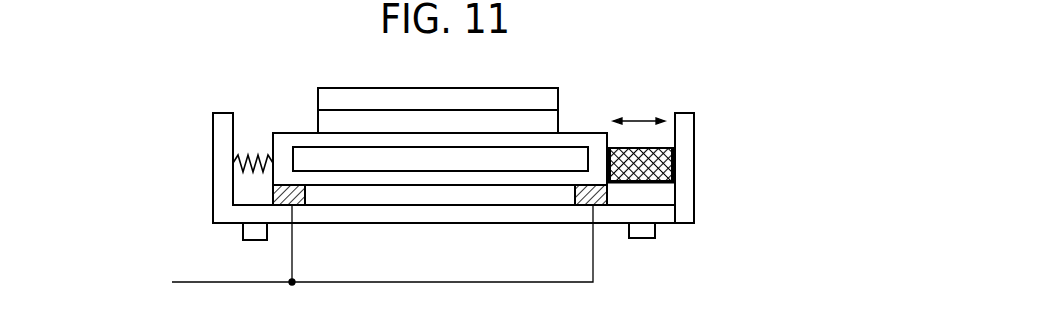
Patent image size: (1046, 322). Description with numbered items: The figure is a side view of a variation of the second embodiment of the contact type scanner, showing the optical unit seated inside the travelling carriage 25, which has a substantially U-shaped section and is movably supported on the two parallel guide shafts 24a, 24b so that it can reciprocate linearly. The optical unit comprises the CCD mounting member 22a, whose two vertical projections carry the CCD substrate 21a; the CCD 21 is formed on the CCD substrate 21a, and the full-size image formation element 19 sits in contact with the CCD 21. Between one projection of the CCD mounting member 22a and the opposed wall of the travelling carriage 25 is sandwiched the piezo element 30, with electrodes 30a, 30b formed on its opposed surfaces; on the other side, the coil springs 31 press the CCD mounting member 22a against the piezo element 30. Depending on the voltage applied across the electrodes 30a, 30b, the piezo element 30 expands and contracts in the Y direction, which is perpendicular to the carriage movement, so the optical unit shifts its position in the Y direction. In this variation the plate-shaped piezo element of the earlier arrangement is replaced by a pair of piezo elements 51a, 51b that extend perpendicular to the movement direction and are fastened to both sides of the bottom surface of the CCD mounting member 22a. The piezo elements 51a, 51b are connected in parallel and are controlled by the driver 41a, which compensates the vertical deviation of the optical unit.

The full-size image formation element 19 is at (530, 102).
The CCD 21 is at (553, 125).
The CCD substrate 21a is at (297, 132).
The CCD mounting member 22a is at (437, 186).
The guide shaft 24a is at (243, 237).
The guide shaft 24b is at (648, 245).
The travelling carriage 25 is at (688, 172).
The piezo element 30 is at (675, 176).
The electrode 30a is at (608, 190).
The electrode 30b is at (673, 205).
The coil spring 31 is at (240, 177).
The driver 41a is at (321, 258).
The piezo element 51a is at (283, 198).
The piezo element 51b is at (577, 200).
The Y direction Y is at (647, 120).